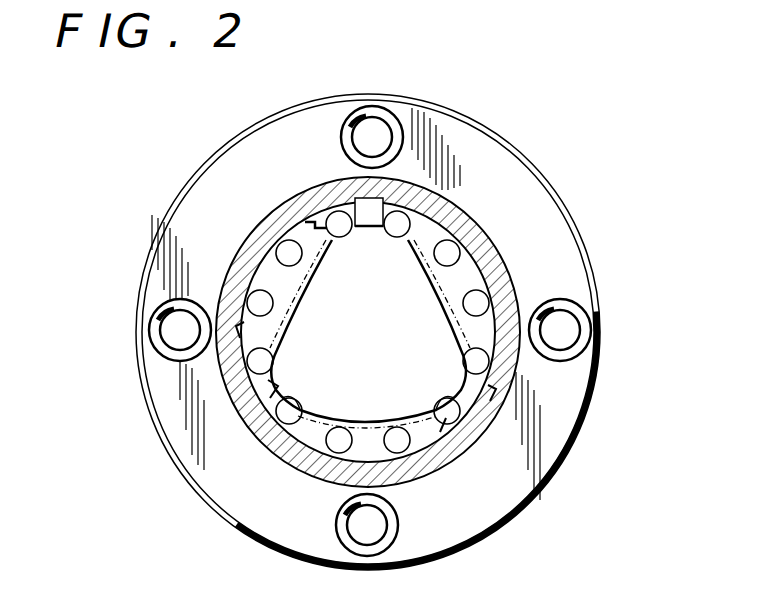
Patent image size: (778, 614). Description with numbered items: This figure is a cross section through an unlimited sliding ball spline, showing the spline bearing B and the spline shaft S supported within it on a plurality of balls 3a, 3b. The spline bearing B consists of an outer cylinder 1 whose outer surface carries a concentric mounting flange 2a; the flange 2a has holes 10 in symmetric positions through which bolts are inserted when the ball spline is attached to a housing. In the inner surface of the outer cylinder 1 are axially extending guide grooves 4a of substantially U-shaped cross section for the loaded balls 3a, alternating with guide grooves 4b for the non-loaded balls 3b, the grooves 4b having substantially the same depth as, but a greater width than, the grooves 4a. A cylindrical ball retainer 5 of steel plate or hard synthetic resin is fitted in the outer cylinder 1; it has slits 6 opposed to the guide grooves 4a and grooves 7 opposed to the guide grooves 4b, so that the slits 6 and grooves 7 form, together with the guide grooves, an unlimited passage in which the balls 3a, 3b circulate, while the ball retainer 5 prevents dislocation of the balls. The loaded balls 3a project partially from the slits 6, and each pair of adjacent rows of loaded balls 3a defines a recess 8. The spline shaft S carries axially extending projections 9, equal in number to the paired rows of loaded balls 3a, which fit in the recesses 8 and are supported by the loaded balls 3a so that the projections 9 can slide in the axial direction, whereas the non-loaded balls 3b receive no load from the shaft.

The outer cylinder 1 is at (267, 220).
The mounting flange 2a is at (453, 130).
The loaded balls 3a is at (368, 200).
The non-loaded balls 3b is at (452, 243).
The guide grooves for loaded balls 4a is at (263, 422).
The guide grooves for non-loaded balls 4b is at (255, 270).
The ball retainer 5 is at (353, 420).
The slits 6 is at (282, 348).
The grooves 7 is at (399, 422).
The recesses 8 is at (371, 229).
The projections 9 is at (505, 372).
The holes 10 is at (380, 125).
The spline bearing B is at (470, 203).
The spline shaft S is at (428, 408).